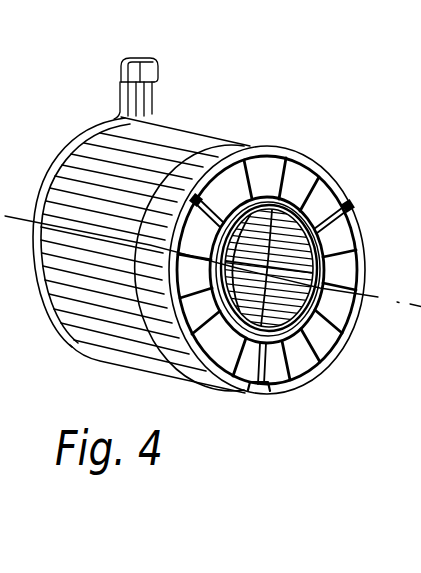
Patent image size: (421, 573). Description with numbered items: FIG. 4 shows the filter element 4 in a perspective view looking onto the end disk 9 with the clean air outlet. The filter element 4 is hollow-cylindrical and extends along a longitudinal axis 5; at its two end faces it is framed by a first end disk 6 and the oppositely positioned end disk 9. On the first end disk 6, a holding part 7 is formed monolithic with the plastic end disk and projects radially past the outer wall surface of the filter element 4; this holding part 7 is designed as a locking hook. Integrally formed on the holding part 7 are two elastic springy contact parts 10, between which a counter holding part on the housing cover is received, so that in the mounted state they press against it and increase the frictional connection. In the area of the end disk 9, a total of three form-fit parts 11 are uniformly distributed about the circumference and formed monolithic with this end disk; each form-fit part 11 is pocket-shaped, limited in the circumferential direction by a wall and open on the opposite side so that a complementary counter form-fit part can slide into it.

The filter element 4 is at (63, 182).
The longitudinal axis 5 is at (384, 300).
The end disk 6 is at (92, 139).
The holding part 7 is at (120, 90).
The end disk 9 is at (311, 163).
The elastic springy contact parts 10 is at (119, 71).
The form-fit parts 11 is at (197, 206).